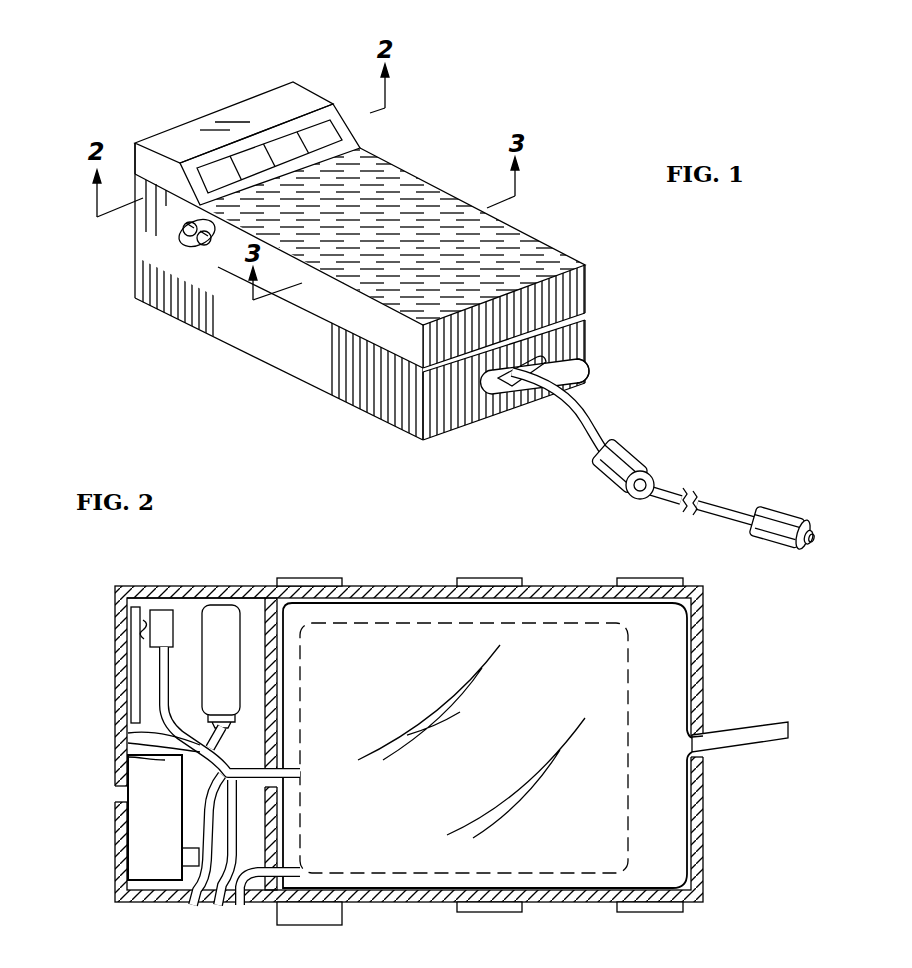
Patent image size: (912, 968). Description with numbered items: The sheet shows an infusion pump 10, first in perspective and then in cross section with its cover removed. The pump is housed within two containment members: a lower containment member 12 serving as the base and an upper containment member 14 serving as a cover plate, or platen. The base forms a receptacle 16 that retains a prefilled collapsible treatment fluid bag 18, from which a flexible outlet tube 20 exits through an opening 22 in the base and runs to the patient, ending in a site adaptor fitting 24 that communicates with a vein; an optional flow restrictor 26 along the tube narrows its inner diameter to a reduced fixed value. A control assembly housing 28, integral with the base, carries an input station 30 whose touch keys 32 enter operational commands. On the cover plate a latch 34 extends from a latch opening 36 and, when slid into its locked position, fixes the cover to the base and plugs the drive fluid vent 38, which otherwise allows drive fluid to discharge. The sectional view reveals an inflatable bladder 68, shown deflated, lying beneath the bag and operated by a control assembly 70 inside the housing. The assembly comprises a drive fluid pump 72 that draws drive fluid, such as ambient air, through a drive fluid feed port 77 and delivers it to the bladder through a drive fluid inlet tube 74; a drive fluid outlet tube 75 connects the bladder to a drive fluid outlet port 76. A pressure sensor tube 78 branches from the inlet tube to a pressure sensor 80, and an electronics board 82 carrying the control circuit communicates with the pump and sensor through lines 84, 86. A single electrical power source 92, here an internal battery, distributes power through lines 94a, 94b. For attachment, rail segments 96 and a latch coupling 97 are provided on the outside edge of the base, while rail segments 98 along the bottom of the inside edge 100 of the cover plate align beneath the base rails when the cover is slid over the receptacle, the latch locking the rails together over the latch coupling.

In FIG. 1, the infusion pump 10 is at (464, 115).
In FIG. 1, the lower containment member 12 is at (335, 378).
In FIG. 2, the lower containment member 12 is at (583, 903).
In FIG. 1, the upper containment member 14 is at (545, 257).
In FIG. 1, the receptacle 16 is at (488, 385).
In FIG. 2, the receptacle 16 is at (707, 896).
In FIG. 1, the collapsible treatment fluid bag 18 is at (503, 390).
In FIG. 2, the collapsible treatment fluid bag 18 is at (665, 852).
In FIG. 1, the flexible outlet tube 20 is at (594, 443).
In FIG. 2, the flexible outlet tube 20 is at (753, 727).
In FIG. 1, the opening 22 is at (566, 365).
In FIG. 2, the opening 22 is at (703, 743).
In FIG. 1, the site adaptor fitting 24 is at (774, 507).
In FIG. 1, the flow restrictor 26 is at (634, 463).
In FIG. 1, the control assembly housing 28 is at (264, 103).
In FIG. 2, the control assembly housing 28 is at (180, 592).
In FIG. 1, the input station 30 is at (333, 106).
In FIG. 1, the touch keys 32 is at (270, 152).
In FIG. 1, the latch 34 is at (198, 250).
In FIG. 1, the latch opening 36 is at (190, 246).
In FIG. 1, the drive fluid vent 38 is at (183, 232).
In FIG. 2, the inflatable bladder 68 is at (422, 847).
In FIG. 2, the control assembly 70 is at (96, 632).
In FIG. 2, the drive fluid pump 72 is at (155, 838).
In FIG. 2, the drive fluid inlet tube 74 is at (188, 893).
In FIG. 2, the drive fluid outlet tube 75 is at (218, 893).
In FIG. 2, the drive fluid outlet port 76 is at (237, 902).
In FIG. 2, the drive fluid feed port 77 is at (115, 793).
In FIG. 2, the pressure sensor tube 78 is at (160, 668).
In FIG. 2, the pressure sensor 80 is at (158, 612).
In FIG. 2, the electronics board 82 is at (125, 613).
In FIG. 2, the line 84 is at (128, 743).
In FIG. 2, the line 86 is at (143, 620).
In FIG. 2, the electrical power source 92 is at (222, 627).
In FIG. 2, the line 94a is at (128, 757).
In FIG. 2, the line 94b is at (128, 735).
In FIG. 2, the rail segments 96 is at (490, 578).
In FIG. 2, the latch coupling 97 is at (313, 927).
In FIG. 2, the rail segments 98 is at (617, 935).
In FIG. 2, the inside edge 100 is at (484, 935).